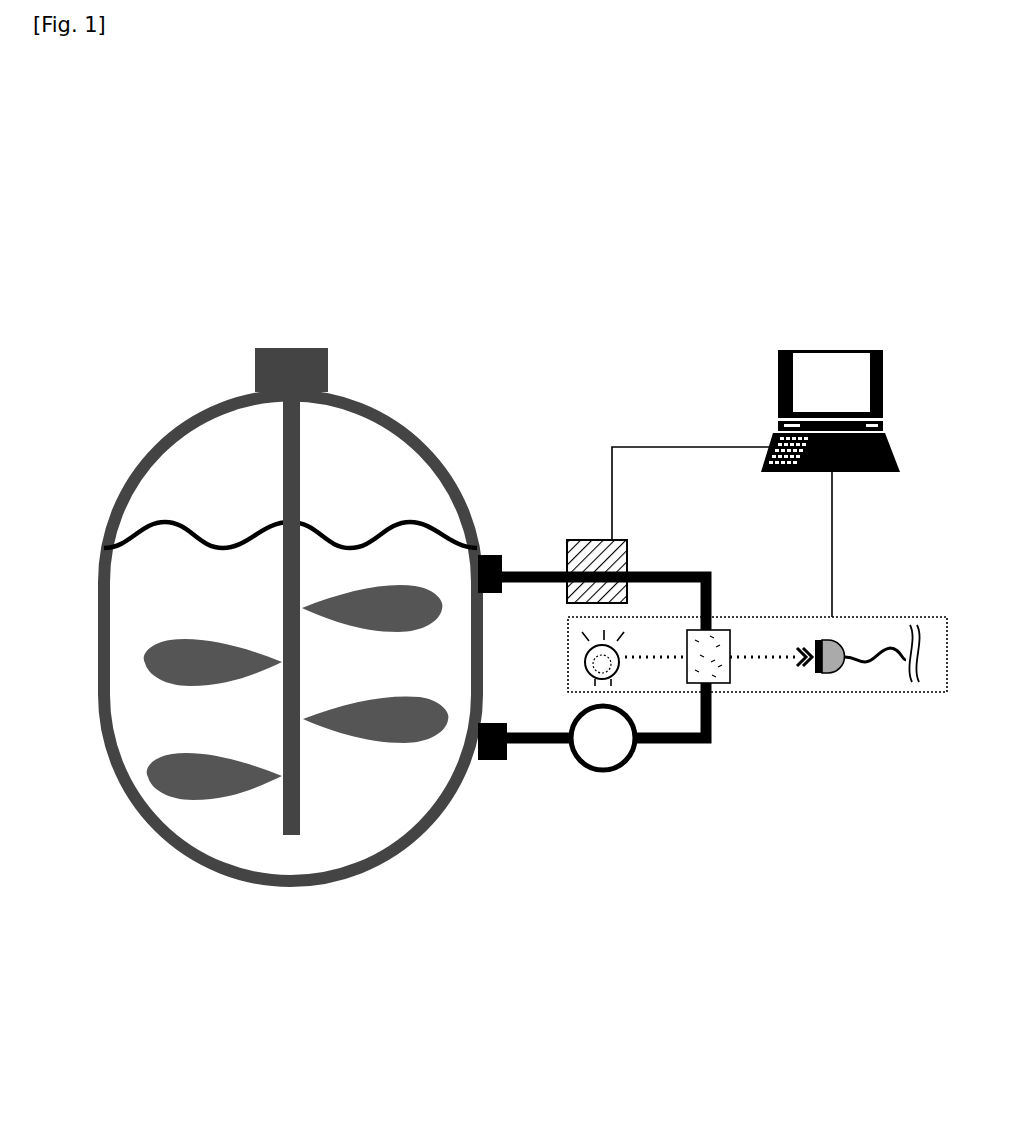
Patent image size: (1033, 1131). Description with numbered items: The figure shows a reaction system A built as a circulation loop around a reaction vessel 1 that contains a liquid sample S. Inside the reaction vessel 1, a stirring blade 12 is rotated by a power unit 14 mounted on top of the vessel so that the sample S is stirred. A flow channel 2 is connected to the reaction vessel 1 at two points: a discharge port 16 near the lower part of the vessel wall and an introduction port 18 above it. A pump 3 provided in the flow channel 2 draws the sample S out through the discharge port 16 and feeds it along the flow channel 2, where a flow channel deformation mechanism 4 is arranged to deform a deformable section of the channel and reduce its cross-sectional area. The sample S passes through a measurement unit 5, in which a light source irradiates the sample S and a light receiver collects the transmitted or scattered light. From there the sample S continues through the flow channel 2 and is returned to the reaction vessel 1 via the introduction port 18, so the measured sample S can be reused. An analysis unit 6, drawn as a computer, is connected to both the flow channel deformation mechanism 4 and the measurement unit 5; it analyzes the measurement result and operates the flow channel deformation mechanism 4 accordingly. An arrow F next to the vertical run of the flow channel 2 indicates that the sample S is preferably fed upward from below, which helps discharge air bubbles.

The reaction system A is at (145, 265).
The reaction vessel 1 is at (158, 443).
The flow channel 2 is at (670, 572).
The pump 3 is at (622, 770).
The flow channel deformation mechanism 4 is at (600, 540).
The measurement unit 5 is at (815, 692).
The analysis unit 6 is at (778, 368).
The stirring blade 12 is at (207, 780).
The power unit 14 is at (335, 380).
The discharge port 16 is at (488, 762).
The introduction port 18 is at (497, 555).
The sample S is at (320, 853).
The arrow F is at (735, 710).